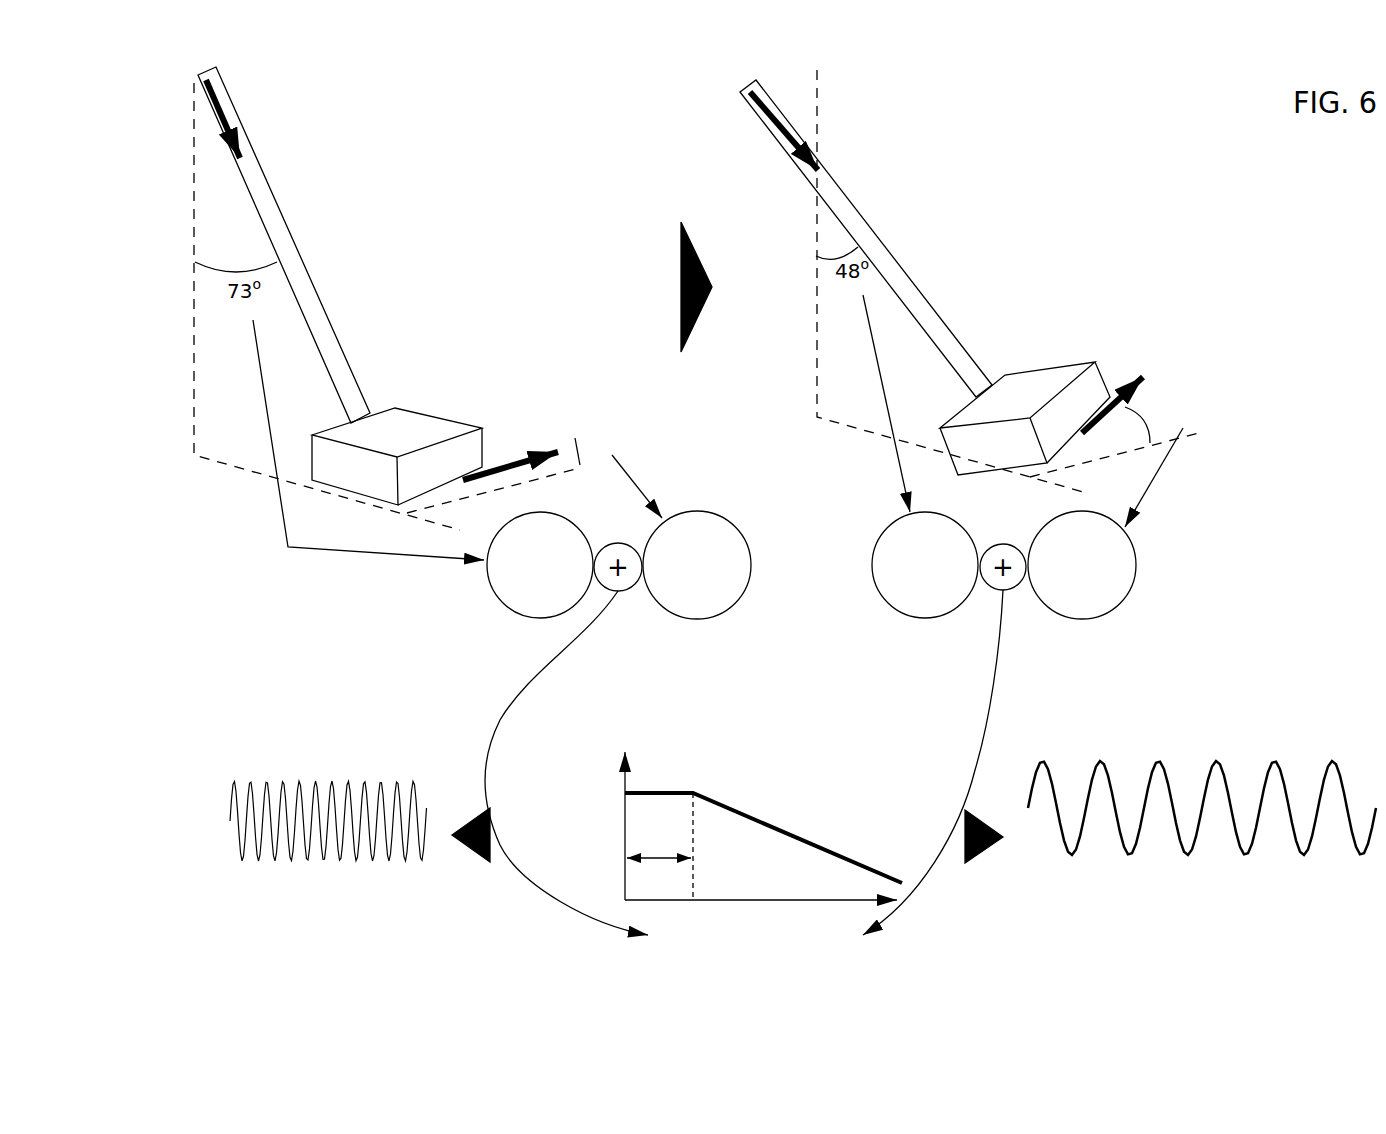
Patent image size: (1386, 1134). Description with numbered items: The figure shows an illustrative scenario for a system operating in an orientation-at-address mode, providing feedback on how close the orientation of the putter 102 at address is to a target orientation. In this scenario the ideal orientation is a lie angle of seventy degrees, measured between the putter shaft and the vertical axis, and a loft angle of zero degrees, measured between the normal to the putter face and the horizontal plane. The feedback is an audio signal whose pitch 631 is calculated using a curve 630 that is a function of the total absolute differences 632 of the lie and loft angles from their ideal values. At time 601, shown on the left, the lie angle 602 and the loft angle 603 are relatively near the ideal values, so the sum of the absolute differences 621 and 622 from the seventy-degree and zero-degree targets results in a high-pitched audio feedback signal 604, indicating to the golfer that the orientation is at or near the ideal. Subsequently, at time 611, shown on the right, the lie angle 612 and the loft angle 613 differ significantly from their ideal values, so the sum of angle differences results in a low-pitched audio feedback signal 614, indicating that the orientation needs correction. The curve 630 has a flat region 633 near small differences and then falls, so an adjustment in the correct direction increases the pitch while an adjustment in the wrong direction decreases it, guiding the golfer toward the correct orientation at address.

The putter 102 is at (318, 317).
The time 601 is at (455, 130).
The lie angle 602 is at (235, 311).
The loft angle 603 is at (592, 418).
The high-pitched audio feedback signal 604 is at (320, 762).
The time 611 is at (1113, 128).
The lie angle 612 is at (847, 290).
The loft angle 613 is at (1185, 378).
The low-pitched audio feedback signal 614 is at (1230, 758).
The absolute difference 621 is at (508, 610).
The absolute difference 622 is at (733, 605).
The curve 630 is at (772, 830).
The pitch 631 is at (678, 722).
The total absolute differences 632 is at (840, 975).
The dead zone range 633 is at (658, 853).